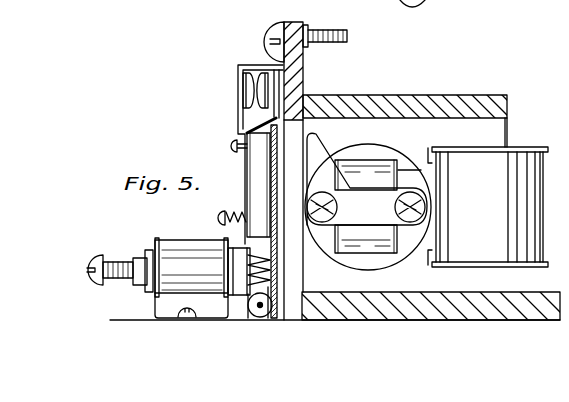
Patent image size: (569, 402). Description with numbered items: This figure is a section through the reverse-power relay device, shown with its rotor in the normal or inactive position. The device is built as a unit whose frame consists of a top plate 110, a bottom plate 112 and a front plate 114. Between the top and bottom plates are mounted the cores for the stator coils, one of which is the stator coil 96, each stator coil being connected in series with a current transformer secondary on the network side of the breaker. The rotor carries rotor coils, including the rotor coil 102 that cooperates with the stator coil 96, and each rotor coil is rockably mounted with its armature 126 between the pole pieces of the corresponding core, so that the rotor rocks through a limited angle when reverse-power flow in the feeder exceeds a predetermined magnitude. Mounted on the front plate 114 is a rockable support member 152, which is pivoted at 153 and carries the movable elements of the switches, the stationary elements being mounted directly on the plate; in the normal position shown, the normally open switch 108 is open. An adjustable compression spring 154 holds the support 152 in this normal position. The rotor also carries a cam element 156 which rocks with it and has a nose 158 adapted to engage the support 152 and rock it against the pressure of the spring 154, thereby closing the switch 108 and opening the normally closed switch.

The stator coil 96 is at (517, 168).
The rotor coil 102 is at (377, 160).
The normally open switch 108 is at (244, 90).
The top plate 110 is at (495, 98).
The bottom plate 112 is at (435, 308).
The front plate 114 is at (297, 76).
The armature 126 is at (412, 175).
The rockable support member 152 is at (270, 195).
The pivot 153 is at (259, 310).
The adjustable compression spring 154 is at (268, 270).
The cam element 156 is at (380, 240).
The nose 158 is at (313, 147).